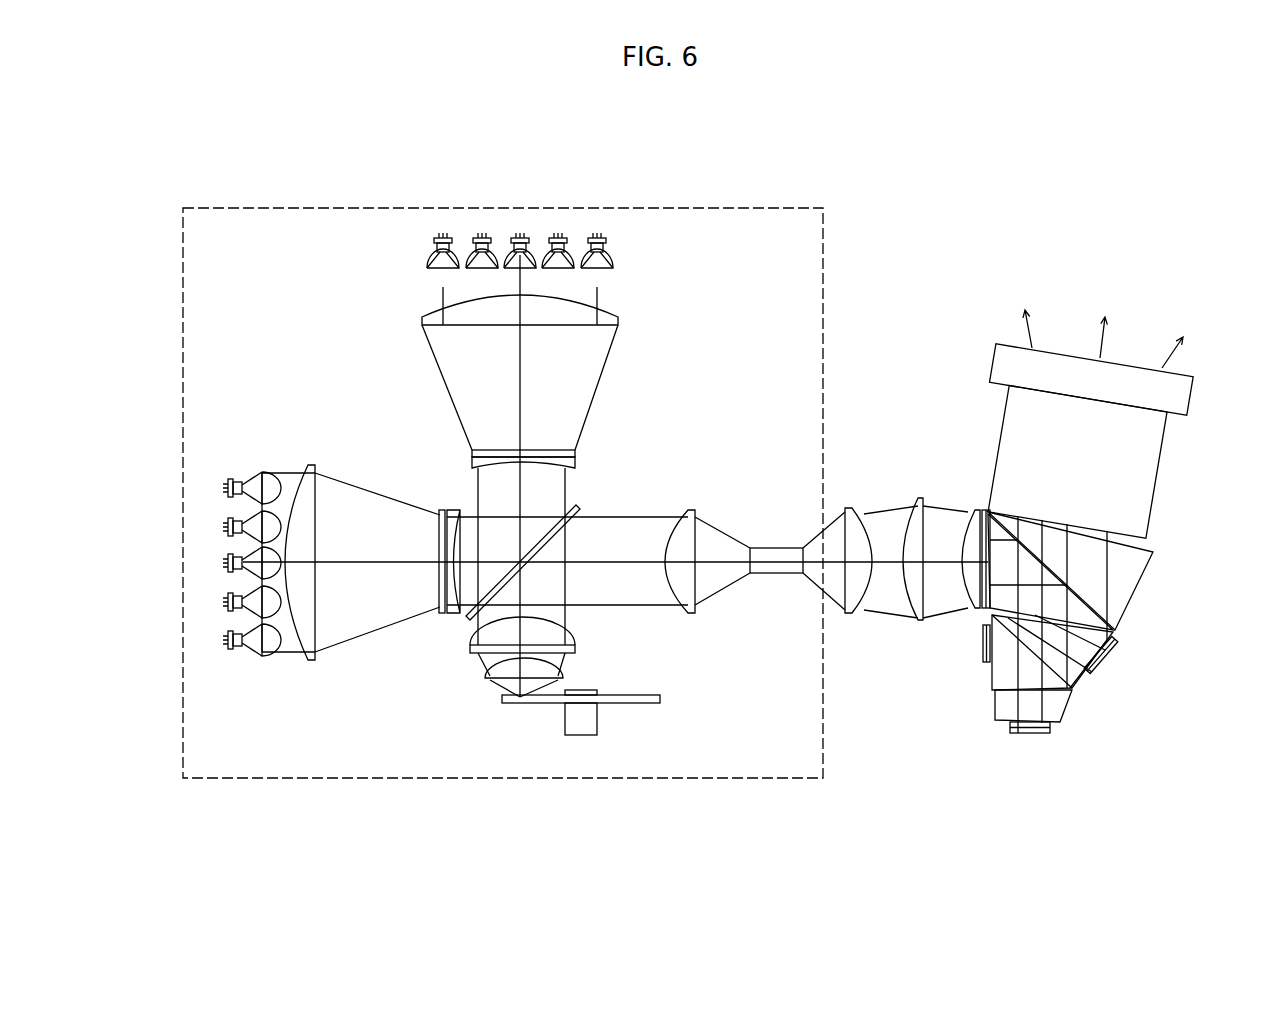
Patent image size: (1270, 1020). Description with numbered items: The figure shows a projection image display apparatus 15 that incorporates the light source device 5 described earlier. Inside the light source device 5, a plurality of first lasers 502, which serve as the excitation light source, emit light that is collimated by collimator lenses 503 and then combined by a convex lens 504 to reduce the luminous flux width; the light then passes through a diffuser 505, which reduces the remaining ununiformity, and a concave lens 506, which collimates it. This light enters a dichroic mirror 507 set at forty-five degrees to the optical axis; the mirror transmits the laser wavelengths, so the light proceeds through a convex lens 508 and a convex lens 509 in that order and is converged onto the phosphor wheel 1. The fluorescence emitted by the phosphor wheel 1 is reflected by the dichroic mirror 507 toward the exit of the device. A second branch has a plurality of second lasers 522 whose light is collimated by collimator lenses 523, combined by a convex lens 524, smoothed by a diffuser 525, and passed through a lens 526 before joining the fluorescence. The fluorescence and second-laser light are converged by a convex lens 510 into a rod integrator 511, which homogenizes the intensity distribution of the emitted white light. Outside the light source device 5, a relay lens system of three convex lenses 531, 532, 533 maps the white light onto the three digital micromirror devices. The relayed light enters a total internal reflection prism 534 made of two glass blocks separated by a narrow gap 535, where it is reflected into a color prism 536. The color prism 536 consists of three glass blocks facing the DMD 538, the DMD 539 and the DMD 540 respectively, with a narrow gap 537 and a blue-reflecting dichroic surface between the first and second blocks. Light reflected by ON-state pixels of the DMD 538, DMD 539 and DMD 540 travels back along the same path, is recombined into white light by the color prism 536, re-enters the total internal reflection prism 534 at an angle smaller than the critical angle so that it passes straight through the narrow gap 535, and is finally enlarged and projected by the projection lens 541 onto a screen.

The phosphor wheel 1 is at (660, 703).
The light source device 5 is at (733, 210).
The projection image display apparatus 15 is at (1084, 206).
The first lasers 502 is at (437, 244).
The collimator lenses 503 is at (437, 281).
The convex lens 504 is at (425, 322).
The diffuser 505 is at (472, 452).
The concave lens 506 is at (472, 463).
The dichroic mirror 507 is at (468, 620).
The convex lens 508 is at (472, 650).
The convex lens 509 is at (487, 680).
The convex lens 510 is at (690, 510).
The rod integrator 511 is at (780, 573).
The second lasers 522 is at (233, 481).
The collimator lenses 523 is at (263, 650).
The convex lens 524 is at (312, 660).
The diffuser 525 is at (440, 612).
The lens 526 is at (450, 614).
The convex lens 531 is at (848, 508).
The convex lens 532 is at (912, 585).
The convex lens 533 is at (972, 513).
The total internal reflection prism 534 is at (1133, 559).
The narrow gap 535 is at (1103, 608).
The color prism 536 is at (1000, 707).
The narrow gap 537 is at (1071, 688).
The digital micromirror device (DMD) 538 is at (1118, 656).
The DMD 539 is at (982, 645).
The DMD 540 is at (1028, 735).
The projection lens 541 is at (1023, 455).